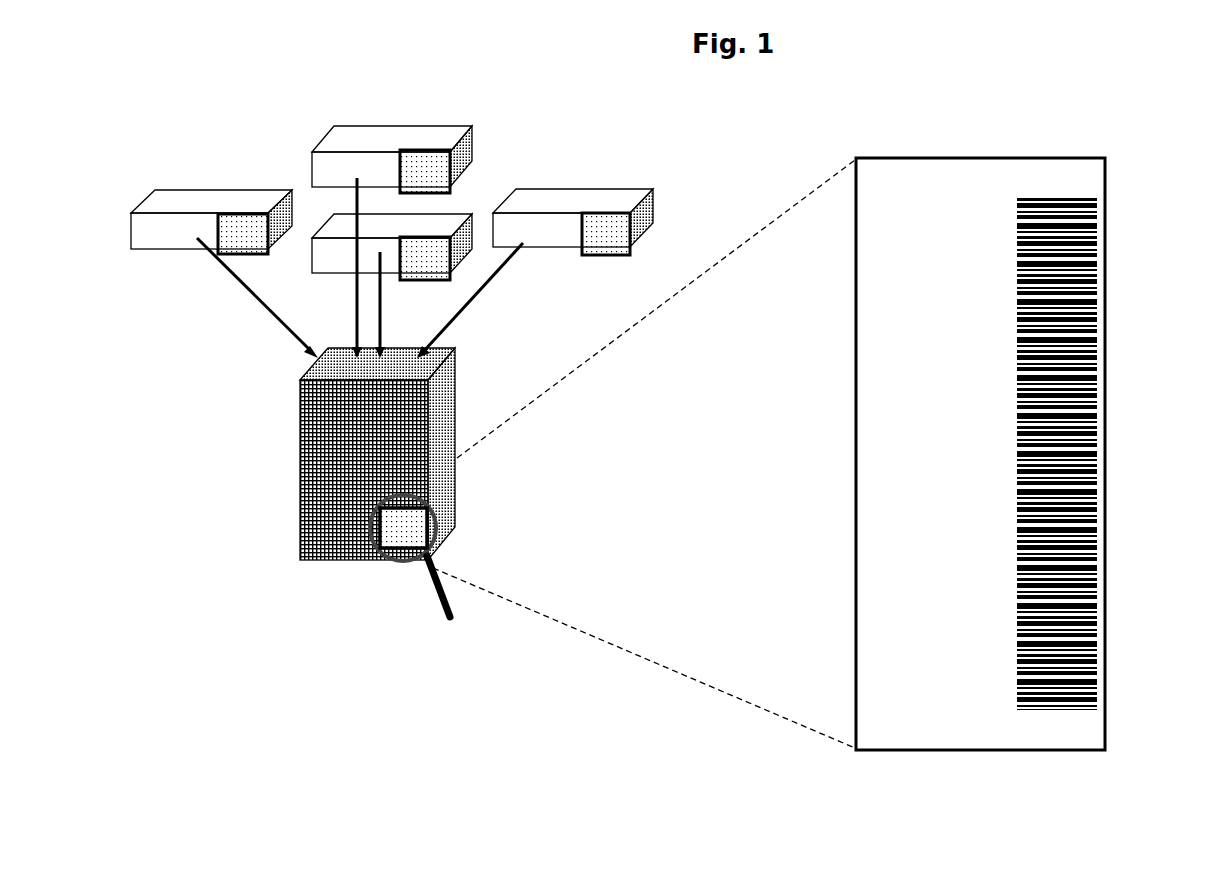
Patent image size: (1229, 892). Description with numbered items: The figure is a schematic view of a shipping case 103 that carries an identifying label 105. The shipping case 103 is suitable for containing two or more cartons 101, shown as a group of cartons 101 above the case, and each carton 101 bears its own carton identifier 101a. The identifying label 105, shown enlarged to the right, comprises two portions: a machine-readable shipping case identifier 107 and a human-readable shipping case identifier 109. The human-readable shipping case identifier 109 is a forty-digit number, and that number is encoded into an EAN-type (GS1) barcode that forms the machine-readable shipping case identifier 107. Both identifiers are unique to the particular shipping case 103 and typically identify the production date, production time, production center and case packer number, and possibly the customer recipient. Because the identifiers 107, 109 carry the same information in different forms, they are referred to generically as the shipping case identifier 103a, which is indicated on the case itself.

The carton 101 is at (323, 165).
The carton identifier 101a is at (437, 163).
The shipping case 103 is at (310, 412).
The shipping case identifier 103a is at (386, 570).
The identifying label 105 is at (1070, 158).
The machine-readable shipping case identifier 107 is at (1100, 464).
The human-readable shipping case identifier 109 is at (1002, 693).